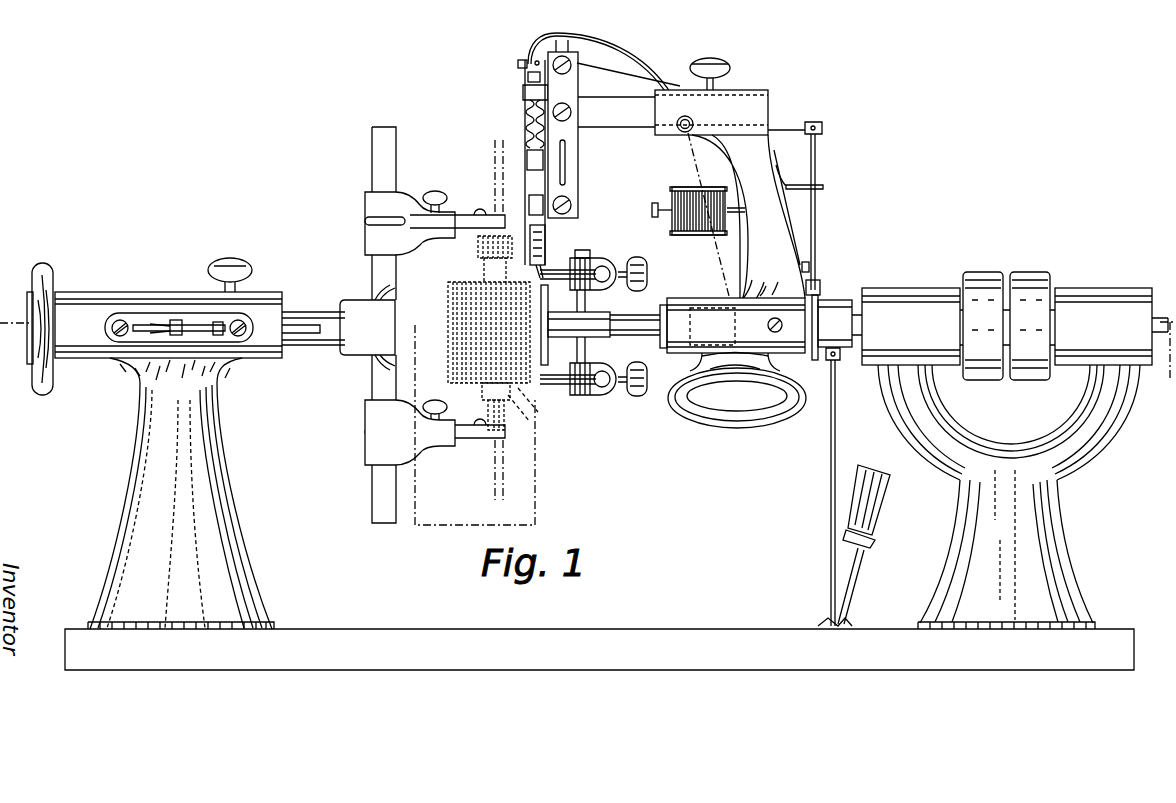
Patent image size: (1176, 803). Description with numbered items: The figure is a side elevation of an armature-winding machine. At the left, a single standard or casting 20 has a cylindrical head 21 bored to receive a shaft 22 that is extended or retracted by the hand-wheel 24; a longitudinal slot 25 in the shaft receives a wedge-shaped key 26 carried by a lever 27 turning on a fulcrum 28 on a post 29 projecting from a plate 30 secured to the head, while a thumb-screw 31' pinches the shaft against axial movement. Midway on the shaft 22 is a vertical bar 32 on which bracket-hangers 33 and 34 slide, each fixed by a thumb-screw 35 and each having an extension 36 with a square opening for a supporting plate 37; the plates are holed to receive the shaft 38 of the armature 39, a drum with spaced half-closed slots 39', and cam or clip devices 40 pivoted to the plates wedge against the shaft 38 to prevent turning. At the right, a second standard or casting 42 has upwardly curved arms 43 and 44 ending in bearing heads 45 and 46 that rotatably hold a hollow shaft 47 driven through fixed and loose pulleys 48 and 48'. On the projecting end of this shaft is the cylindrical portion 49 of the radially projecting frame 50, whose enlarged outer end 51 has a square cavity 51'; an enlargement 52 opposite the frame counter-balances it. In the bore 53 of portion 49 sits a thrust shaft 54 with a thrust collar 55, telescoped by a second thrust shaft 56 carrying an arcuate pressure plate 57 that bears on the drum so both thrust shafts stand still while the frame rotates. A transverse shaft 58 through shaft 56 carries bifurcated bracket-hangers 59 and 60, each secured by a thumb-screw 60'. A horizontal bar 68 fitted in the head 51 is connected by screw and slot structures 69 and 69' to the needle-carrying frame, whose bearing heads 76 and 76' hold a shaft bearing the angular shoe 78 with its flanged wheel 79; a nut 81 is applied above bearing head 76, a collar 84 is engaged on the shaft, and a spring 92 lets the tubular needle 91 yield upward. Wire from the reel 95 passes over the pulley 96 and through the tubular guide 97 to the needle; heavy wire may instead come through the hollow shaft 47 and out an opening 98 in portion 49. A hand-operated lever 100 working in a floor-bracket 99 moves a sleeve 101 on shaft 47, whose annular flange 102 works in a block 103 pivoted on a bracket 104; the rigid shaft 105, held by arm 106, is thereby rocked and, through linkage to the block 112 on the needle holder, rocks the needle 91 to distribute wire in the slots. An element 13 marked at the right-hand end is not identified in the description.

The spindle end 13 is at (1164, 339).
The standard 20 is at (222, 522).
The cylindrical head 21 is at (96, 300).
The shaft 22 is at (302, 312).
The hand-wheel 24 is at (42, 266).
The longitudinal slot 25 is at (318, 334).
The wedge-shaped key 26 is at (220, 336).
The lever 27 is at (192, 320).
The fulcrum 28 is at (176, 318).
The post 29 is at (168, 318).
The plate 30 is at (136, 318).
The thumb-screw 31' is at (238, 260).
The vertical bar 32 is at (378, 150).
The bracket-hanger 33 is at (396, 196).
The bracket-hanger 34 is at (398, 412).
The thumb-screw 35 is at (370, 222).
The extension 36 is at (440, 228).
The supporting plate 37 is at (460, 214).
The armature shaft 38 is at (492, 180).
The armature 39 is at (474, 333).
The half-closed slots 39' is at (525, 413).
The cam or clip device 40 is at (478, 220).
The standard 42 is at (1060, 540).
The upwardly curved arm 43 is at (1105, 438).
The upwardly curved arm 44 is at (905, 418).
The bearing head 45 is at (1086, 292).
The bearing head 46 is at (908, 292).
The hollow shaft 47 is at (858, 312).
The fixed pulley 48 is at (983, 312).
The loose pulley 48' is at (1007, 312).
The cylindrical portion 49 is at (700, 306).
The radially projecting frame 50 is at (805, 216).
The enlarged outer end 51 is at (711, 95).
The square cavity 51' is at (742, 75).
The enlargement 52 is at (722, 420).
The bore 53 is at (680, 300).
The thrust shaft 54 is at (624, 316).
The thrust collar 55 is at (663, 350).
The second thrust shaft 56 is at (596, 314).
The pressure plate 57 is at (552, 312).
The transverse shaft 58 is at (588, 350).
The bifurcated bracket-hanger 59 is at (592, 262).
The bifurcated bracket-hanger 60 is at (583, 391).
The thumb-screw 60' is at (648, 336).
The horizontal bar 68 is at (620, 115).
The screw and slot structure 69 is at (582, 135).
The screw and slot structure 69' is at (584, 129).
The bearing head 76 is at (515, 162).
The bearing head 76' is at (524, 205).
The angular shoe 78 is at (545, 236).
The flanged wheel 79 is at (545, 248).
The nut 81 is at (527, 77).
The collar 84 is at (527, 160).
The tubular needle 91 is at (537, 272).
The spring 92 is at (528, 122).
The reel 95 is at (672, 188).
The pulley 96 is at (694, 120).
The tubular guide 97 is at (612, 36).
The opening 98 is at (738, 318).
The floor-bracket 99 is at (830, 617).
The hand operated lever 100 is at (830, 498).
The sleeve 101 is at (830, 300).
The annular flange 102 is at (814, 360).
The block 103 is at (820, 285).
The bracket 104 is at (810, 265).
The shaft 105 is at (816, 195).
The arm 106 is at (800, 185).
The block 112 is at (517, 64).